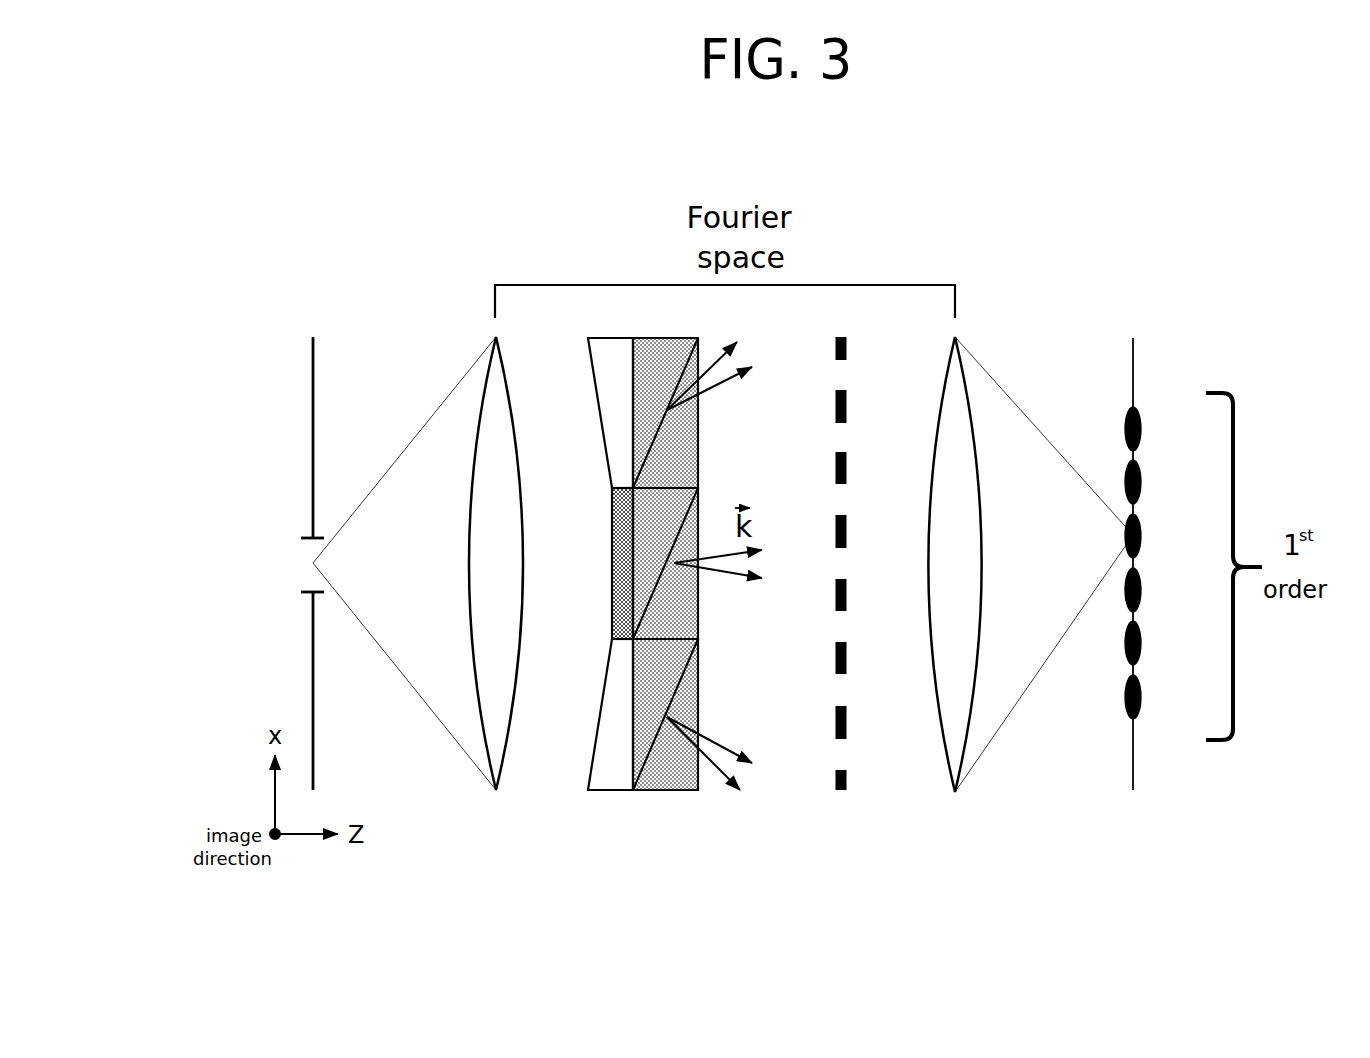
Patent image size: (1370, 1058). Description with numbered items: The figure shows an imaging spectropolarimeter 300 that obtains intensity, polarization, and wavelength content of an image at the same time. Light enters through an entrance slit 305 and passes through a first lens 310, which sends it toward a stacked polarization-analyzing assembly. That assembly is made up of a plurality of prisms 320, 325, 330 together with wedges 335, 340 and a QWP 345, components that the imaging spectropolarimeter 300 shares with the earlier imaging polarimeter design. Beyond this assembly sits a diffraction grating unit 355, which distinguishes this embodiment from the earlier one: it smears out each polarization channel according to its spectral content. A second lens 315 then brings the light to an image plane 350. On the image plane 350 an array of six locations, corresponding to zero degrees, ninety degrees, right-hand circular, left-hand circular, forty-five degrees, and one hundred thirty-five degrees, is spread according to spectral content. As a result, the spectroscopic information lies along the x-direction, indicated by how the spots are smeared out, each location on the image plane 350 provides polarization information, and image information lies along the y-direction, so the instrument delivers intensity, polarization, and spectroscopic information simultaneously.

The imaging spectropolarimeter 300 is at (300, 157).
The entrance slit 305 is at (297, 478).
The first lens 310 is at (442, 382).
The second lens 315 is at (978, 742).
The prism 320 is at (659, 351).
The prism 325 is at (678, 600).
The prism 330 is at (662, 769).
The wedge 335 is at (610, 367).
The wedge 340 is at (617, 775).
The QWP 345 is at (617, 598).
The image plane 350 is at (1130, 370).
The diffraction grating unit 355 is at (858, 747).